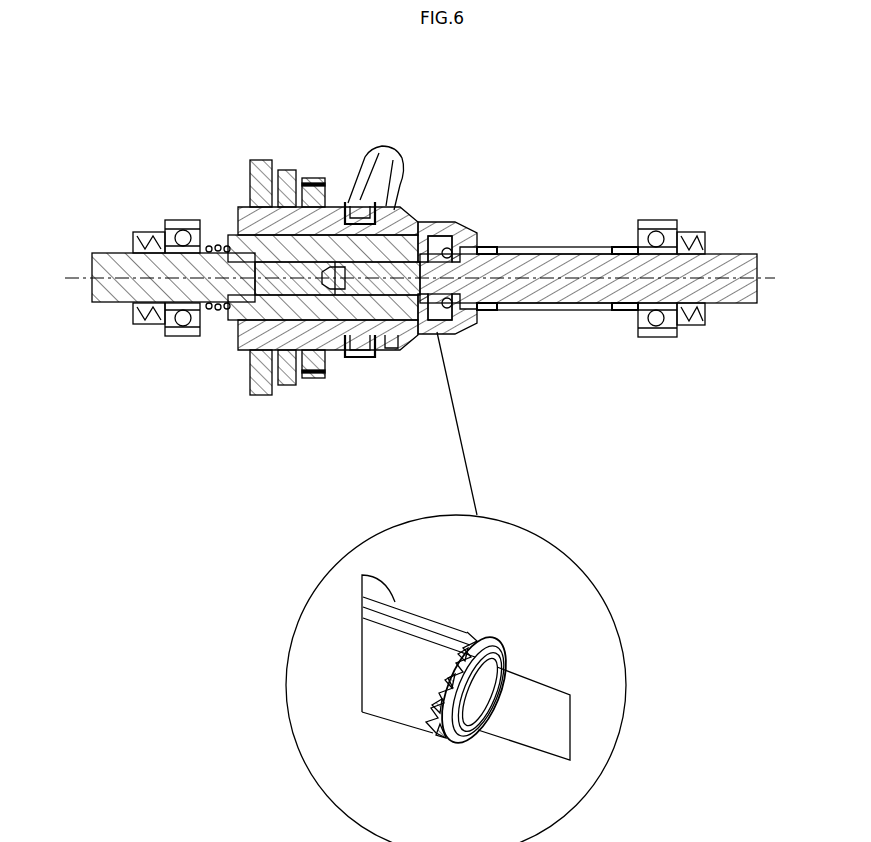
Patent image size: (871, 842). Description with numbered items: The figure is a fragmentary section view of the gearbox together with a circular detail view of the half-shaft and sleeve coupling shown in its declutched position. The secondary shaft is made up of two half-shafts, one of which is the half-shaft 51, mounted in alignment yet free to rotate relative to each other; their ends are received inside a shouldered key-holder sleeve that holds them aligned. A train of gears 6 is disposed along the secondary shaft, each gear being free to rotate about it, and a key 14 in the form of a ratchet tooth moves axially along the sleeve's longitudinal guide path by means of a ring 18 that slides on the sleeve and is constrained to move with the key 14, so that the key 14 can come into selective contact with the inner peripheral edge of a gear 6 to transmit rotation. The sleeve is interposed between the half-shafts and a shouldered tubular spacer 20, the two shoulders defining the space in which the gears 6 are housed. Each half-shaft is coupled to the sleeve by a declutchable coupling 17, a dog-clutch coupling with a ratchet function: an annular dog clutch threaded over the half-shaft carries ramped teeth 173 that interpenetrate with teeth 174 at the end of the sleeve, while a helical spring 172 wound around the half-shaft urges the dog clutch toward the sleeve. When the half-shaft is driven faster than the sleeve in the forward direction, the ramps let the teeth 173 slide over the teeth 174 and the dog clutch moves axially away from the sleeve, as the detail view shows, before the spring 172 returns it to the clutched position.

The gear 6 is at (229, 234).
The key 14 is at (310, 222).
The declutchable coupling 17 is at (438, 637).
The ring 18 is at (350, 200).
The tubular spacer 20 is at (597, 312).
The half-shaft 51 is at (108, 260).
The spring 172 is at (498, 655).
The teeth 173 is at (429, 735).
The teeth 174 is at (425, 703).